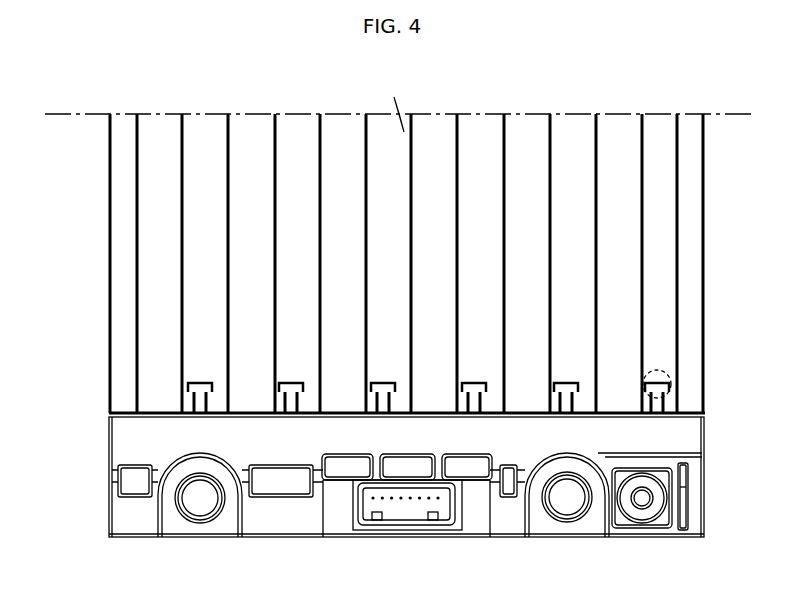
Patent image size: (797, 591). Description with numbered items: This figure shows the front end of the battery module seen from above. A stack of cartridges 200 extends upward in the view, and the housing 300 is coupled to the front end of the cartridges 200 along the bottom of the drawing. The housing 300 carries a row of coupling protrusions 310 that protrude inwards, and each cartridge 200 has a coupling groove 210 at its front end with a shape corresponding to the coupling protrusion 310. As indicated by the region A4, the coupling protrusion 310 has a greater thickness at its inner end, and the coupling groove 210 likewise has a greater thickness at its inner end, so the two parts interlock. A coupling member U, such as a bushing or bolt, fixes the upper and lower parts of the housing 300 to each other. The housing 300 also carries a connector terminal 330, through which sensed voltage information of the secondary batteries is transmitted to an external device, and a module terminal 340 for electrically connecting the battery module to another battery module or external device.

The cartridge 200 is at (533, 122).
The coupling groove 210 is at (298, 383).
The coupling protrusion 310 is at (297, 412).
The housing 300 is at (91, 447).
The connector terminal 330 is at (407, 527).
The module terminal 340 is at (643, 522).
The coupling member U is at (200, 521).
The detail region A4 is at (676, 377).